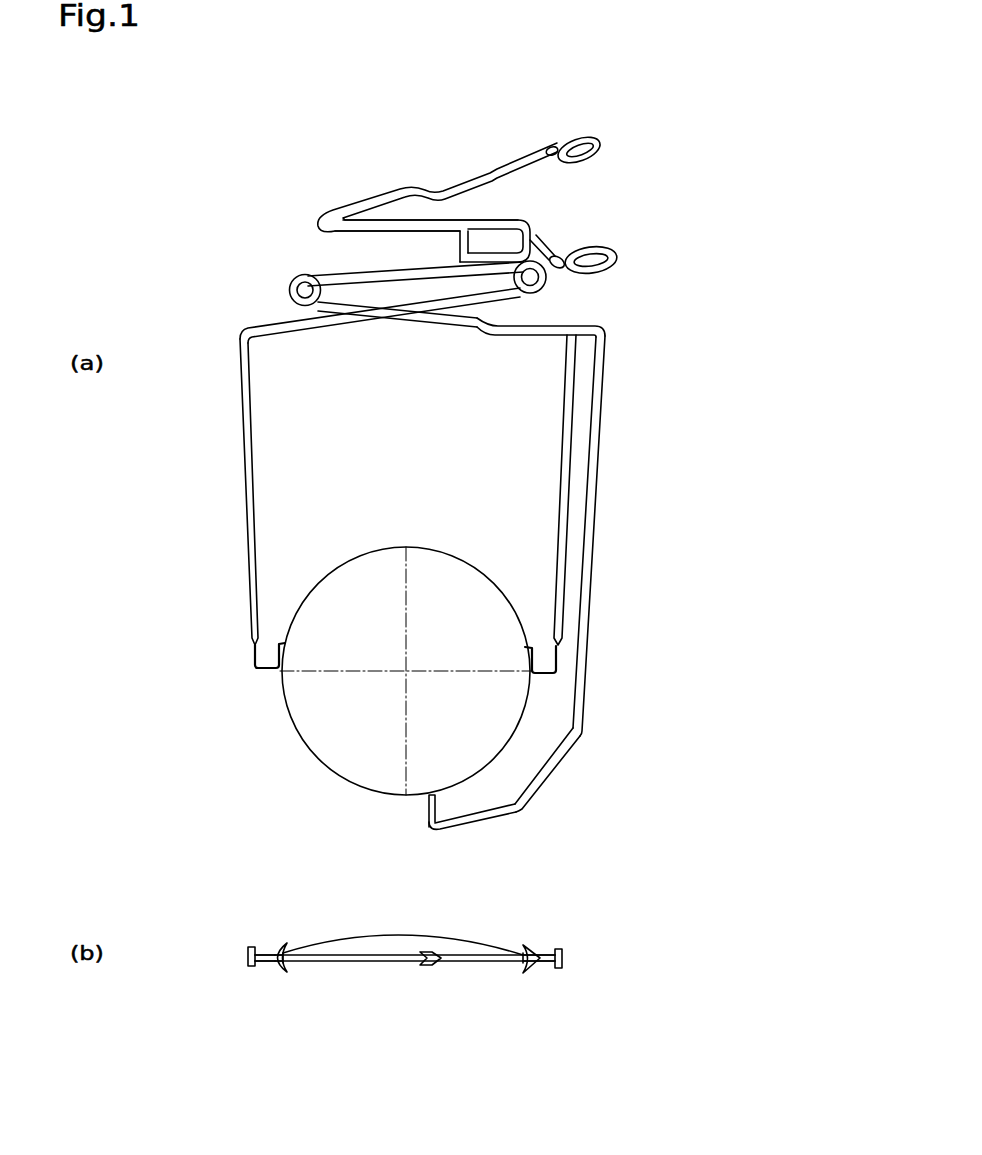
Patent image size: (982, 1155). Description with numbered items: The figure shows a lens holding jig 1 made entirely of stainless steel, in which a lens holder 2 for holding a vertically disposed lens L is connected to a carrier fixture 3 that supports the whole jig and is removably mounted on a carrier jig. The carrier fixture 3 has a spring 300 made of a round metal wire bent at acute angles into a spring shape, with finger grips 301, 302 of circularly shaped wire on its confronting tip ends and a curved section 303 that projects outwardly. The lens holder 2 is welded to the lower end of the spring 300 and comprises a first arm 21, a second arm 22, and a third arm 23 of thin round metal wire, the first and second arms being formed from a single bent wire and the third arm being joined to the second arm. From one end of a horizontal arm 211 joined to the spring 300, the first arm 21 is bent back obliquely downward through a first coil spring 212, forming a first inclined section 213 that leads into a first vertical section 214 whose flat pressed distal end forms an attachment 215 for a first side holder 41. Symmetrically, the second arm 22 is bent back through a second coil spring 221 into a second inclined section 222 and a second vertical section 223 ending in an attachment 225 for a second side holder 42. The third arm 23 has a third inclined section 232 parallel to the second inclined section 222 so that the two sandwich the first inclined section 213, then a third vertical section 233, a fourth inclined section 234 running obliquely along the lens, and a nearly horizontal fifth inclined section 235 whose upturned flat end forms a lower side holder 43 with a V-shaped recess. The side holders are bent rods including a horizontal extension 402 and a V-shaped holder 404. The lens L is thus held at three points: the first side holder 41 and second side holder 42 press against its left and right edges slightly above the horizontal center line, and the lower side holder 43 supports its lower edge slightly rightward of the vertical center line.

The lens holding jig 1 is at (733, 322).
The lens holder 2 is at (652, 489).
The carrier fixture 3 is at (286, 214).
The first arm 21 is at (208, 471).
The horizontal arm 211 is at (347, 268).
The first coil spring 212 is at (548, 279).
The first inclined section 213 is at (318, 328).
The first vertical section 214 is at (255, 462).
The attachment 215 is at (252, 646).
The second arm 22 is at (526, 512).
The second coil spring 221 is at (288, 290).
The second inclined section 222 is at (452, 325).
The second vertical section 223 is at (557, 440).
The attachment 225 is at (557, 660).
The third arm 23 is at (602, 742).
The third inclined section 232 is at (538, 328).
The third vertical section 233 is at (600, 528).
The fourth inclined section 234 is at (565, 765).
The fifth inclined section 235 is at (483, 826).
The spring 300 is at (640, 190).
The finger grip 301 is at (575, 138).
The finger grip 302 is at (622, 260).
The curved section 303 is at (402, 186).
The first side holder 41 is at (265, 683).
The second side holder 42 is at (538, 681).
The lower side holder 43 is at (419, 818).
The horizontal extension 402 is at (284, 942).
The V-shaped holder 404 is at (273, 968).
The lens L is at (318, 740).